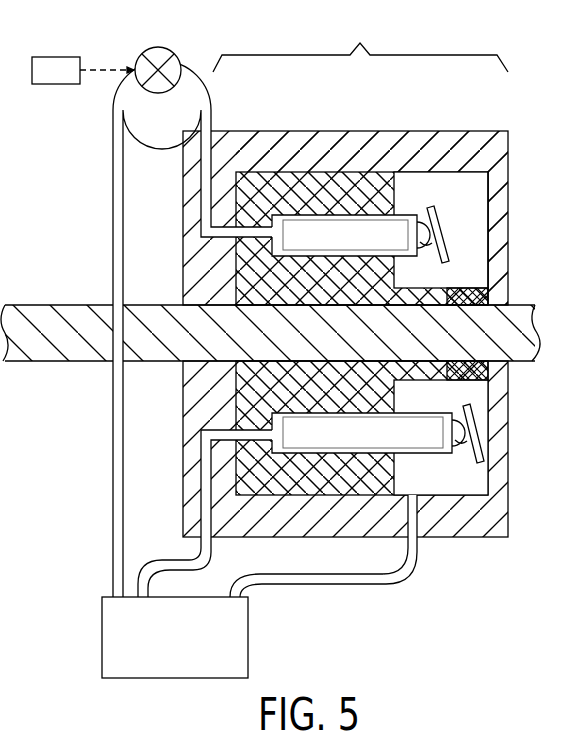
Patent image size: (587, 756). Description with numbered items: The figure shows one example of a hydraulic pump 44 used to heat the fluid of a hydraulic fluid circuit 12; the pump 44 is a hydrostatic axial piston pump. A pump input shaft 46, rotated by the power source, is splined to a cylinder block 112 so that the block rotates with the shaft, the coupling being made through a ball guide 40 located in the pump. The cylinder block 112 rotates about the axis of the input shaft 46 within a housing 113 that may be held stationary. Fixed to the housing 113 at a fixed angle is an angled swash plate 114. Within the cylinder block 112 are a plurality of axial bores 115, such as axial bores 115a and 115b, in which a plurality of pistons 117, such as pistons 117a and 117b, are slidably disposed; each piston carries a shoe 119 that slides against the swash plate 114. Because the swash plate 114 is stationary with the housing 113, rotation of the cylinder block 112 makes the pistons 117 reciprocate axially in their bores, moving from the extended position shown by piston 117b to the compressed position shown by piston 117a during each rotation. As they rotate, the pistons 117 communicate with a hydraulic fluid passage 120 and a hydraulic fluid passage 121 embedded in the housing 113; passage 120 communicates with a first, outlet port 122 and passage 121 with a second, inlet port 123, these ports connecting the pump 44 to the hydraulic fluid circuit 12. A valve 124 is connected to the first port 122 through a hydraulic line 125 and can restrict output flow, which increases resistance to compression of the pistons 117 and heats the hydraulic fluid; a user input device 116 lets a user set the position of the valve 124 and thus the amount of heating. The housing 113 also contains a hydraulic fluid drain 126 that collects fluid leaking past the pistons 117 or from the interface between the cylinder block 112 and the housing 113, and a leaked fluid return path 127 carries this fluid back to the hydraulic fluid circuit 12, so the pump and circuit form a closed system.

The hydraulic fluid circuit 12 is at (183, 649).
The ball guide 40 is at (489, 283).
The hydraulic pump 44 is at (360, 43).
The input shaft 46 is at (42, 304).
The cylinder block 112 is at (378, 178).
The housing 113 is at (348, 130).
The swash plate 114 is at (489, 168).
The axial bores 115 is at (296, 215).
The axial bore 115a is at (282, 222).
The axial bore 115b is at (303, 433).
The user input device 116 is at (72, 81).
The pistons 117 is at (411, 221).
The piston 117a is at (368, 258).
The piston 117b is at (397, 409).
The shoe 119 is at (430, 207).
The hydraulic fluid passage 120 is at (200, 163).
The hydraulic fluid passage 121 is at (200, 482).
The first port 122 is at (214, 131).
The second port 123 is at (213, 539).
The valve 124 is at (145, 53).
The hydraulic line 125 is at (212, 98).
The hydraulic fluid drain 126 is at (418, 513).
The leaked fluid return path 127 is at (330, 584).